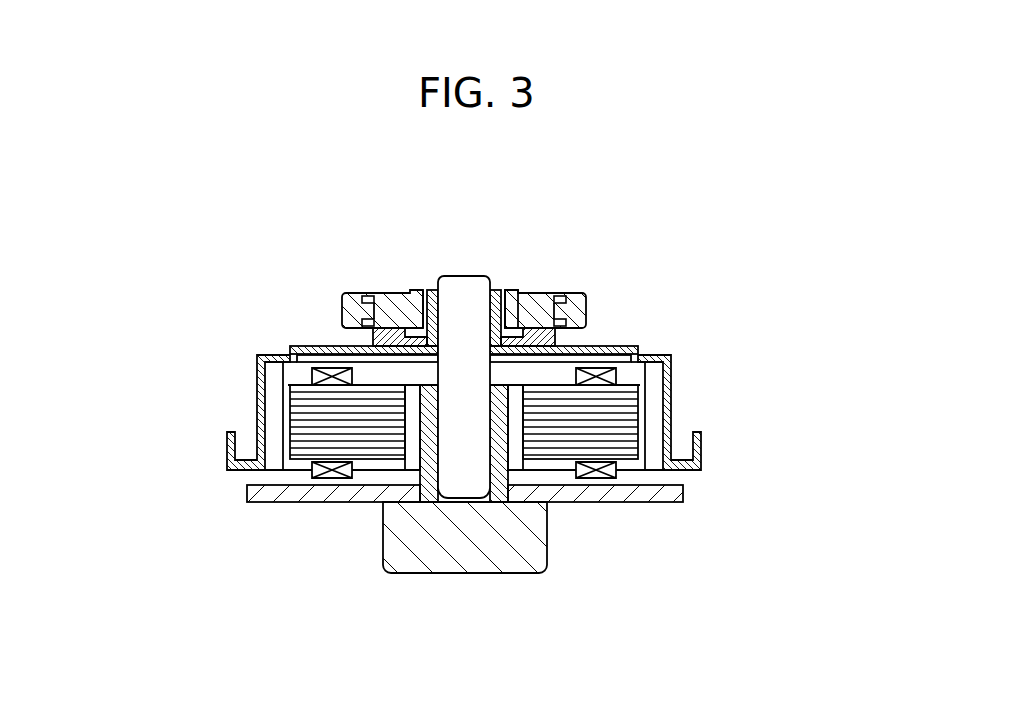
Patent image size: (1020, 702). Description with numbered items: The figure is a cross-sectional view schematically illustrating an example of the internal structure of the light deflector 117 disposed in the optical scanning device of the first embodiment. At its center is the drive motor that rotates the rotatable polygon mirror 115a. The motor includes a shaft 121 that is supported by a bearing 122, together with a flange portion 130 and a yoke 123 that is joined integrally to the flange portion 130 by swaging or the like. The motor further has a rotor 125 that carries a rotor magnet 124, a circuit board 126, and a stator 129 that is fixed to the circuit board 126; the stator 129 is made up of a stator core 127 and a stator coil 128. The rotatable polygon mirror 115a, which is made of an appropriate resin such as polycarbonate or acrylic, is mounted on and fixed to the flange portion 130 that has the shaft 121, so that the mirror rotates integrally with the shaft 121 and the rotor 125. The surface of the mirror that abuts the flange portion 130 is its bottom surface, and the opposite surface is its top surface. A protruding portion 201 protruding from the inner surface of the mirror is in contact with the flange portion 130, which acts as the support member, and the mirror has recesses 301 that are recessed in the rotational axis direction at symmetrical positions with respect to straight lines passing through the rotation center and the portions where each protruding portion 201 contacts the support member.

The light deflector 117 is at (690, 182).
The shaft 121 is at (455, 272).
The protruding portion 201 is at (413, 292).
The recess 301 is at (363, 292).
The rotatable polygon mirror 115a is at (528, 294).
The flange portion 130 is at (373, 338).
The rotor 125 is at (814, 332).
The yoke 123 is at (673, 370).
The rotor magnet 124 is at (657, 453).
The stator 129 is at (122, 330).
The stator coil 128 is at (310, 378).
The stator core 127 is at (305, 424).
The circuit board 126 is at (636, 505).
The bearing 122 is at (535, 533).